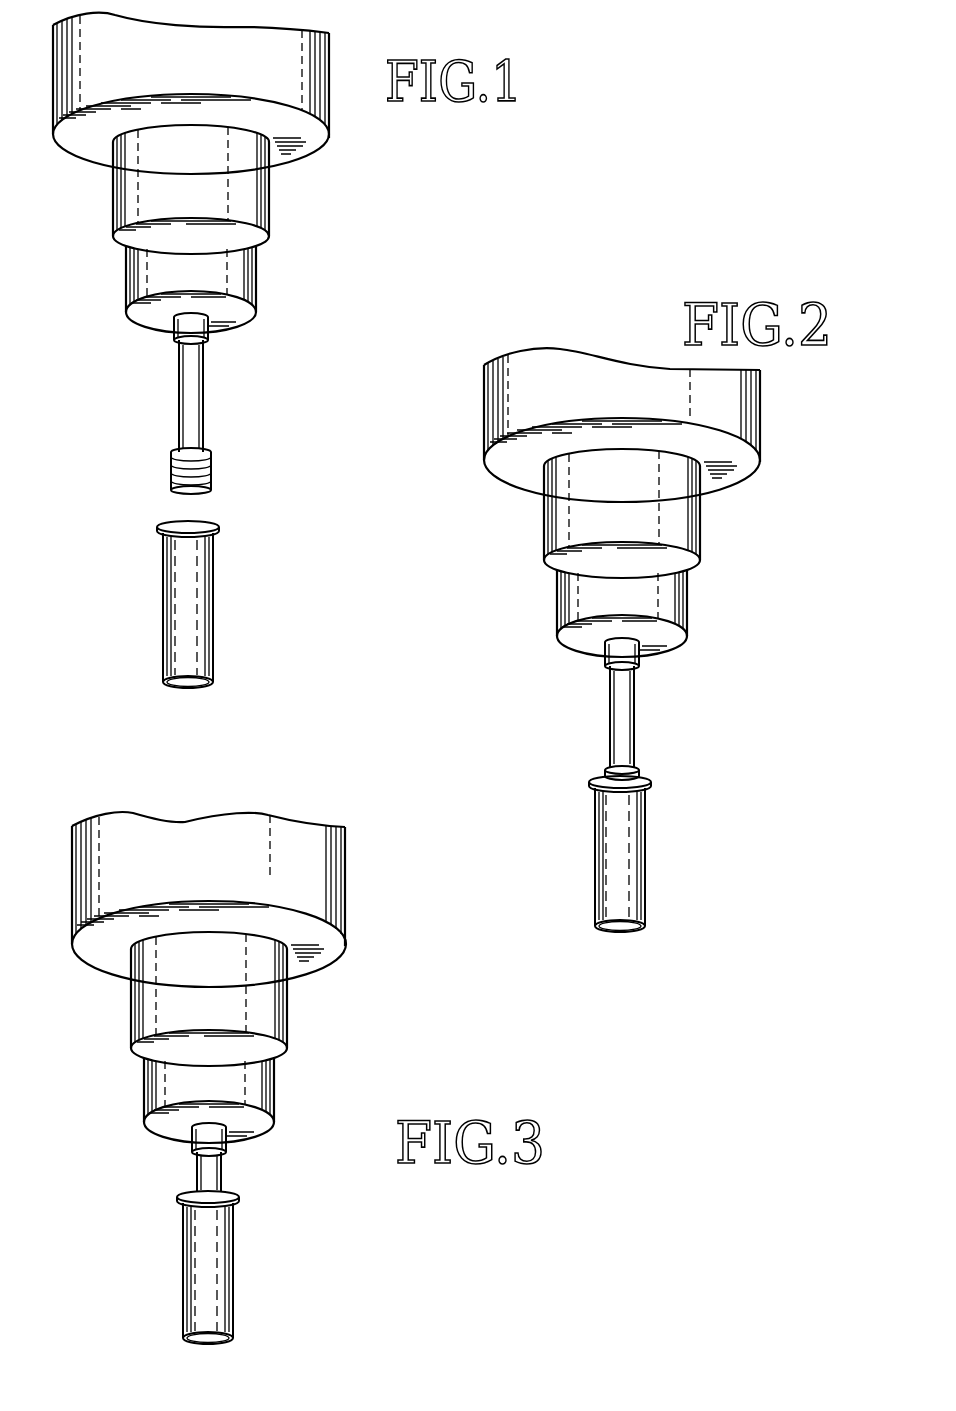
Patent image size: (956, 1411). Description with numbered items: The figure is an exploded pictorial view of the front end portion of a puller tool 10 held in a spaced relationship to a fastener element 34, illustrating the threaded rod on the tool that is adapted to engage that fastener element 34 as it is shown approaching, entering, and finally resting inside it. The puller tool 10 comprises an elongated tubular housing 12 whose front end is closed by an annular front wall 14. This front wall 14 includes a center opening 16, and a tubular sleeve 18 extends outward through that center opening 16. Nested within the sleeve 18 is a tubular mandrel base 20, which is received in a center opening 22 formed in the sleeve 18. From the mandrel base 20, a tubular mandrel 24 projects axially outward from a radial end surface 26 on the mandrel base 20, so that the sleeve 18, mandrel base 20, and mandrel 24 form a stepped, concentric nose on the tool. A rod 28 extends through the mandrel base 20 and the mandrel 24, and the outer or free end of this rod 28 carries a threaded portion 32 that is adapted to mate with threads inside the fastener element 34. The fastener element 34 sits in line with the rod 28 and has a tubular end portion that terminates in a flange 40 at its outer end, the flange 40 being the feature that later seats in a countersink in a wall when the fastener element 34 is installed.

In FIG. 1, the puller tool 10 is at (370, 148).
In FIG. 2, the puller tool 10 is at (457, 494).
In FIG. 3, the puller tool 10 is at (383, 929).
In FIG. 1, the elongated tubular housing 12 is at (327, 60).
In FIG. 2, the elongated tubular housing 12 is at (748, 427).
In FIG. 3, the elongated tubular housing 12 is at (312, 835).
In FIG. 1, the annular front wall 14 is at (88, 148).
In FIG. 2, the annular front wall 14 is at (740, 472).
In FIG. 3, the annular front wall 14 is at (90, 950).
In FIG. 1, the center opening 16 is at (198, 204).
In FIG. 2, the center opening 16 is at (588, 524).
In FIG. 3, the center opening 16 is at (173, 1014).
In FIG. 1, the tubular sleeve 18 is at (118, 210).
In FIG. 2, the tubular sleeve 18 is at (560, 540).
In FIG. 3, the tubular sleeve 18 is at (152, 1028).
In FIG. 1, the tubular mandrel base 20 is at (140, 287).
In FIG. 2, the tubular mandrel base 20 is at (572, 612).
In FIG. 3, the tubular mandrel base 20 is at (150, 1100).
In FIG. 1, the center opening 22 is at (262, 243).
In FIG. 2, the center opening 22 is at (702, 572).
In FIG. 3, the center opening 22 is at (292, 1052).
In FIG. 1, the tubular mandrel 24 is at (176, 335).
In FIG. 2, the tubular mandrel 24 is at (606, 657).
In FIG. 3, the tubular mandrel 24 is at (192, 1147).
In FIG. 1, the radial end surface 26 is at (244, 320).
In FIG. 2, the radial end surface 26 is at (688, 645).
In FIG. 3, the radial end surface 26 is at (260, 1123).
In FIG. 1, the rod 28 is at (178, 413).
In FIG. 2, the rod 28 is at (632, 718).
In FIG. 3, the rod 28 is at (209, 1172).
In FIG. 1, the threaded portion 32 is at (172, 470).
In FIG. 2, the threaded portion 32 is at (594, 766).
In FIG. 1, the fastener element 34 is at (169, 585).
In FIG. 2, the fastener element 34 is at (661, 841).
In FIG. 3, the fastener element 34 is at (201, 1259).
In FIG. 1, the flange 40 is at (216, 525).
In FIG. 2, the flange 40 is at (648, 779).
In FIG. 3, the flange 40 is at (238, 1197).